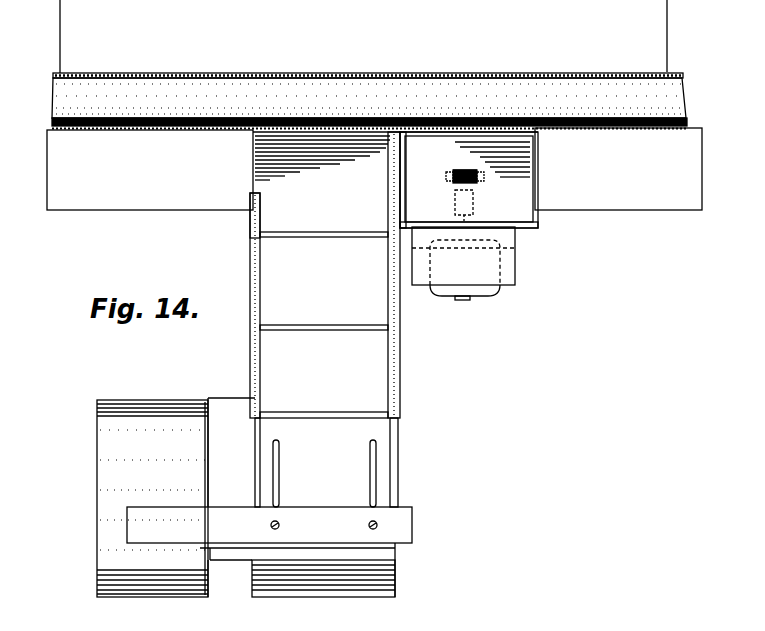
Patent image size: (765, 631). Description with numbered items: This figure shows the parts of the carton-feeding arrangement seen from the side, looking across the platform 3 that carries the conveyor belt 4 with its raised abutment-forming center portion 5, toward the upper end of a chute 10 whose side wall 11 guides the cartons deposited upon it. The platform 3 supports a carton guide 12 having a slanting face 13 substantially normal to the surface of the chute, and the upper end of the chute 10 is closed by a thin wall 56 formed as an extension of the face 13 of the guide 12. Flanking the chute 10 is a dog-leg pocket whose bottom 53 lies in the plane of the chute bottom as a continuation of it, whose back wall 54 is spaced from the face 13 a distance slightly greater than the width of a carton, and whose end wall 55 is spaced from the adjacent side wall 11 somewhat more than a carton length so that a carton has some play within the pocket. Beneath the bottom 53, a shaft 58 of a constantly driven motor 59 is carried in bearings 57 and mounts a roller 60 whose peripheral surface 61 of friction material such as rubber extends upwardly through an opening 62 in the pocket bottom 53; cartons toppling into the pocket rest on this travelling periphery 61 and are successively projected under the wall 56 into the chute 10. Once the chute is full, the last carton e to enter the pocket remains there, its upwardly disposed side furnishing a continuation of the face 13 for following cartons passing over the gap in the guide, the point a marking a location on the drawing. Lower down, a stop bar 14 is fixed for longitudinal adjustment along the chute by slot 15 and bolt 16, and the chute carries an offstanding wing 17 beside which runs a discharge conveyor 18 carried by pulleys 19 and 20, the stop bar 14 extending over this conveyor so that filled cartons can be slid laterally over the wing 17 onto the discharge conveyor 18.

The platform 3 is at (60, 30).
The conveyor belt 4 is at (57, 76).
The raised abutment-forming center portion 5 is at (57, 101).
The chute 10 is at (380, 406).
The side wall 11 is at (250, 313).
The carton guide 12 is at (155, 210).
The slanting face 13 is at (118, 130).
The stop bar 14 is at (226, 510).
The slot 15 is at (368, 482).
The bolt 16 is at (368, 526).
The offstanding wing 17 is at (224, 400).
The discharge conveyor 18 is at (100, 496).
The pulley 19 is at (210, 580).
The pulley 20 is at (209, 426).
The bottom 53 is at (538, 198).
The back wall 54 is at (520, 225).
The end wall 55 is at (530, 165).
The thin wall 56 is at (273, 130).
The bearing 57 is at (455, 207).
The shaft 58 is at (476, 217).
The motor 59 is at (443, 290).
The roller 60 is at (452, 178).
The peripheral surface 61 is at (455, 171).
The opening 62 is at (478, 180).
The point a is at (258, 222).
The carton e is at (405, 222).